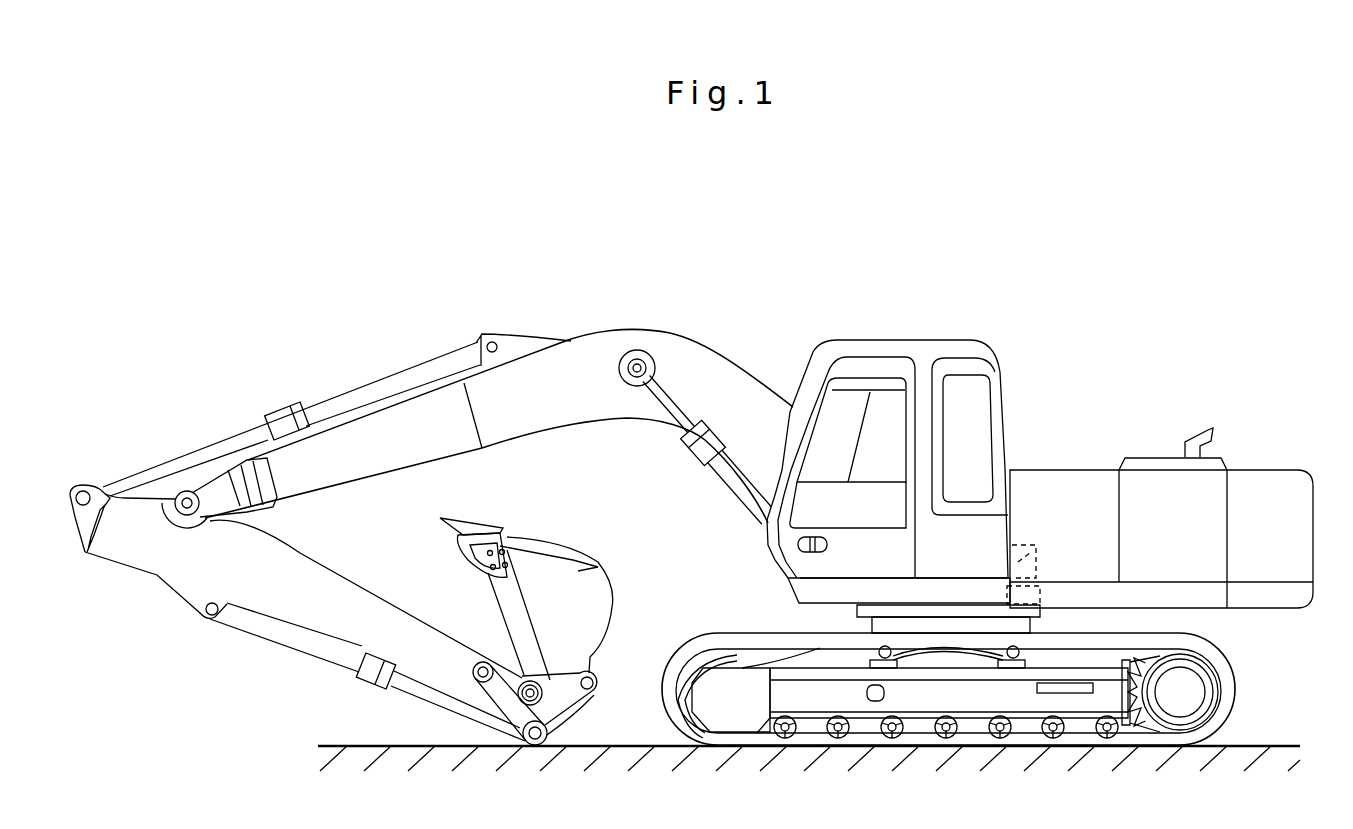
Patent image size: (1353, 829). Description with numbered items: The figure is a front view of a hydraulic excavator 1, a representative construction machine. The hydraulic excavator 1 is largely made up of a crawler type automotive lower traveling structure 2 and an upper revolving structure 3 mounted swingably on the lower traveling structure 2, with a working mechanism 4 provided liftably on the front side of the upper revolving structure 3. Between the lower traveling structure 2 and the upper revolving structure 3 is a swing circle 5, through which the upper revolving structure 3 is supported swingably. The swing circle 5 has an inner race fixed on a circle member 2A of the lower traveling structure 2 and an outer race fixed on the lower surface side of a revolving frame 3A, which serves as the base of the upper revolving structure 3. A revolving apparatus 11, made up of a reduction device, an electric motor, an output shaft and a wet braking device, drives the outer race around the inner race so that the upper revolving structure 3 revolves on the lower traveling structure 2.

The hydraulic excavator 1 is at (881, 298).
The lower traveling structure 2 is at (975, 695).
The circle member 2A is at (940, 622).
The upper revolving structure 3 is at (1160, 456).
The revolving frame 3A is at (1170, 597).
The working mechanism 4 is at (597, 365).
The swing circle 5 is at (853, 613).
The revolving apparatus 11 is at (1035, 547).